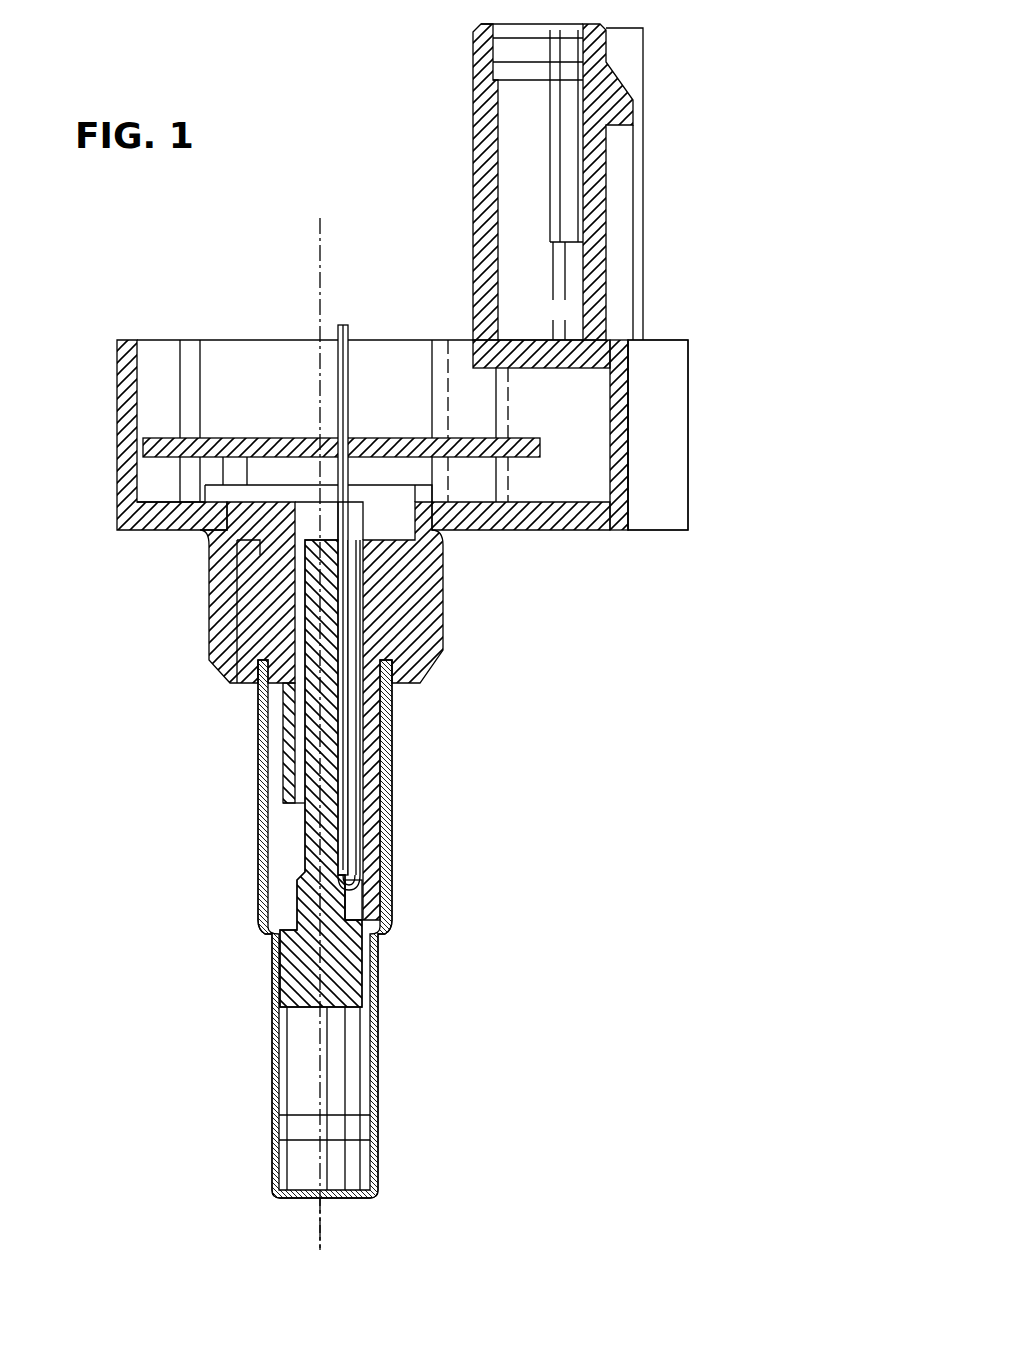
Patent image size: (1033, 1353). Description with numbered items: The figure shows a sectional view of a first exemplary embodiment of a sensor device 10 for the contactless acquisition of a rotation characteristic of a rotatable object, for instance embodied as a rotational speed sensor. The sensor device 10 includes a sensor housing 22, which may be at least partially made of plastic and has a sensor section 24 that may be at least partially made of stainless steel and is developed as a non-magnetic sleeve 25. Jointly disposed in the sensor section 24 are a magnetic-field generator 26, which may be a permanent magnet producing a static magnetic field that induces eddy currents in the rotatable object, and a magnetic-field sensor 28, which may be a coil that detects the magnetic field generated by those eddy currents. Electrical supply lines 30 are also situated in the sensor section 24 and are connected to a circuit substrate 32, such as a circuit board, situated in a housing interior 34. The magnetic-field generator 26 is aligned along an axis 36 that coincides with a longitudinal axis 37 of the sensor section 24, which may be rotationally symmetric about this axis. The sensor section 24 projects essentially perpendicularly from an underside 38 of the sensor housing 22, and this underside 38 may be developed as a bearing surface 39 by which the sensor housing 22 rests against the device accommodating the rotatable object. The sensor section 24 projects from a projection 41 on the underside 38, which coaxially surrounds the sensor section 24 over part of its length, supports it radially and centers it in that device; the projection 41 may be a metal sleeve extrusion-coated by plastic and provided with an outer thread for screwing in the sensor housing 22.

The sensor device 10 is at (700, 48).
The sensor housing 22 is at (597, 222).
The sensor section 24 is at (258, 840).
The non-magnetic sleeve 25 is at (325, 929).
The magnetic-field generator 26 is at (337, 1070).
The magnetic-field sensor 28 is at (337, 1127).
The electrical supply lines 30 is at (340, 385).
The circuit substrate 32 is at (226, 450).
The housing interior 34 is at (287, 383).
The axis 36 is at (322, 1246).
The longitudinal axis 37 is at (322, 226).
The underside 38 is at (555, 531).
The bearing surface 39 is at (658, 435).
The projection 41 is at (420, 650).